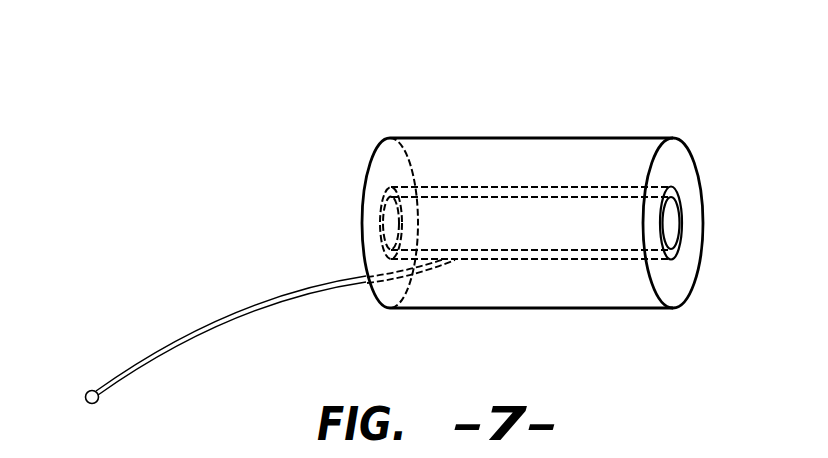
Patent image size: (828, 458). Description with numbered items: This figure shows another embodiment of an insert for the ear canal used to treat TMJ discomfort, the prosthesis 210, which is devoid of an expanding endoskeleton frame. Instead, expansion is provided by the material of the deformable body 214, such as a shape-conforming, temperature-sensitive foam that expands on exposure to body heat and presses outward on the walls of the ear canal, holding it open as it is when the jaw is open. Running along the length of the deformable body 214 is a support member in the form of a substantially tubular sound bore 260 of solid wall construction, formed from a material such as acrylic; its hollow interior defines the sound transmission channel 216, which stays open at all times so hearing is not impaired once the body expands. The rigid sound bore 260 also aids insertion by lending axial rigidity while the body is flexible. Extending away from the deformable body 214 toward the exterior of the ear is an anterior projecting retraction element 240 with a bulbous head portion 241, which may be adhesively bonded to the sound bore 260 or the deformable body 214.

The prosthesis 210 is at (398, 214).
The deformable body 214 is at (490, 137).
The sound transmission channel 216 is at (673, 221).
The sound bore 260 is at (683, 262).
The retraction element 240 is at (232, 303).
The bulbous head portion 241 is at (87, 390).